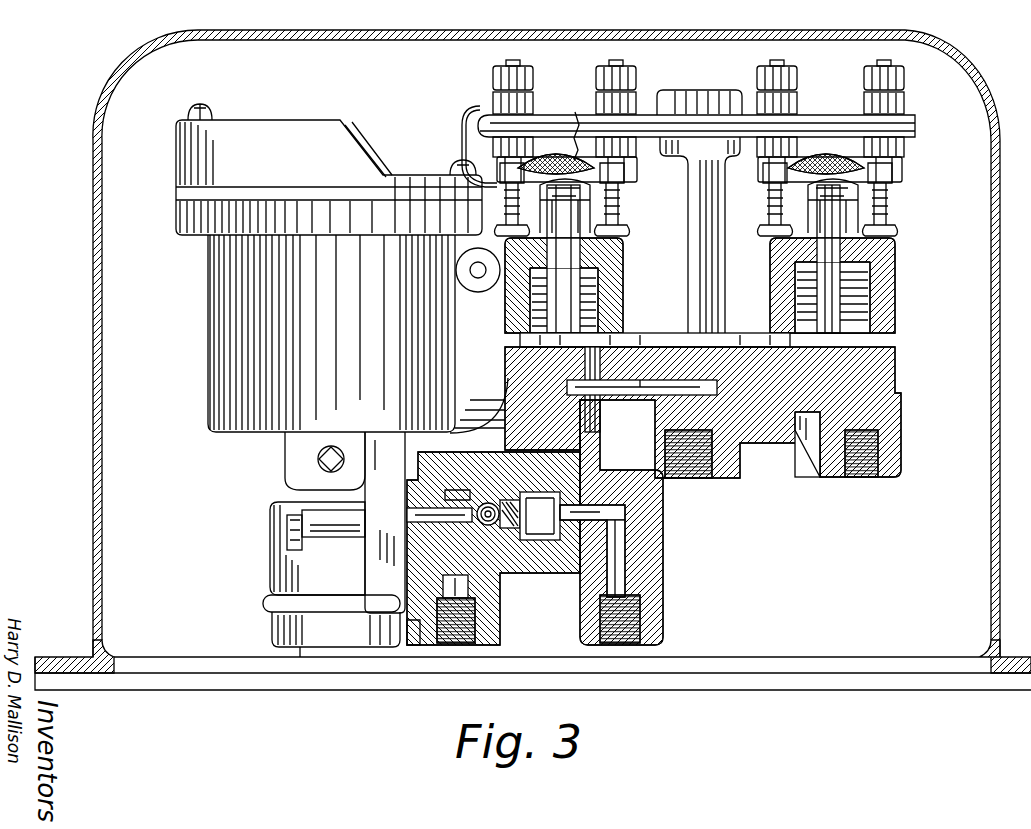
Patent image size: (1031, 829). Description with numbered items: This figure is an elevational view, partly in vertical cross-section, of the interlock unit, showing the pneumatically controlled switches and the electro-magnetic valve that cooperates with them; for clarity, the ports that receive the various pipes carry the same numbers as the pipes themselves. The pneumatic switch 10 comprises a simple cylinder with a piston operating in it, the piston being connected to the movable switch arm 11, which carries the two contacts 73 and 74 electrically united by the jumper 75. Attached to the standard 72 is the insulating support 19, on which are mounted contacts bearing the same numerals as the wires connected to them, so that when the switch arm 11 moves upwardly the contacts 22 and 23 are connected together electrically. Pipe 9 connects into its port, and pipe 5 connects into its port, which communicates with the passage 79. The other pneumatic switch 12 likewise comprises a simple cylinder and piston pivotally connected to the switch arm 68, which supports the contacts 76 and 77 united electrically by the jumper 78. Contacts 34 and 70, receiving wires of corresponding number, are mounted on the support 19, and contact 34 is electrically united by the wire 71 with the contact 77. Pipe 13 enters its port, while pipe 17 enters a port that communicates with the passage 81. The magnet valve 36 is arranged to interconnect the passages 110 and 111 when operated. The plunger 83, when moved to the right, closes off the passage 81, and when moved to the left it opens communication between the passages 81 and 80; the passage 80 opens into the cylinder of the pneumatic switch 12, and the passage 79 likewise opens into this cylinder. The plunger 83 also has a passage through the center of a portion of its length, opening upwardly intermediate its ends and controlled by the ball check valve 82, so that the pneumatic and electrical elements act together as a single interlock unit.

The pipe 5 is at (718, 478).
The pipe 9 is at (870, 477).
The pneumatic switch 10 is at (895, 318).
The switch arm 11 is at (902, 168).
The pneumatic switch 12 is at (623, 298).
The pipe 13 is at (466, 643).
The pipe 17 is at (638, 643).
The insulating support 19 is at (915, 125).
The contact 22 is at (797, 80).
The contact 23 is at (904, 84).
The contact 34 is at (530, 78).
The magnet valve 36 is at (208, 355).
The switch arm 68 is at (622, 180).
The contact 70 is at (636, 80).
The wire 71 is at (471, 124).
The standard 72 is at (718, 278).
The contact 73 is at (898, 230).
The contact 74 is at (768, 228).
The jumper 75 is at (848, 155).
The contact 76 is at (628, 232).
The contact 77 is at (482, 260).
The jumper 78 is at (575, 124).
The passage 79 is at (682, 478).
The passage 80 is at (596, 440).
The passage 81 is at (625, 556).
The ball check valve 82 is at (472, 470).
The plunger 83 is at (522, 540).
The passage 110 is at (423, 632).
The passage 111 is at (402, 515).